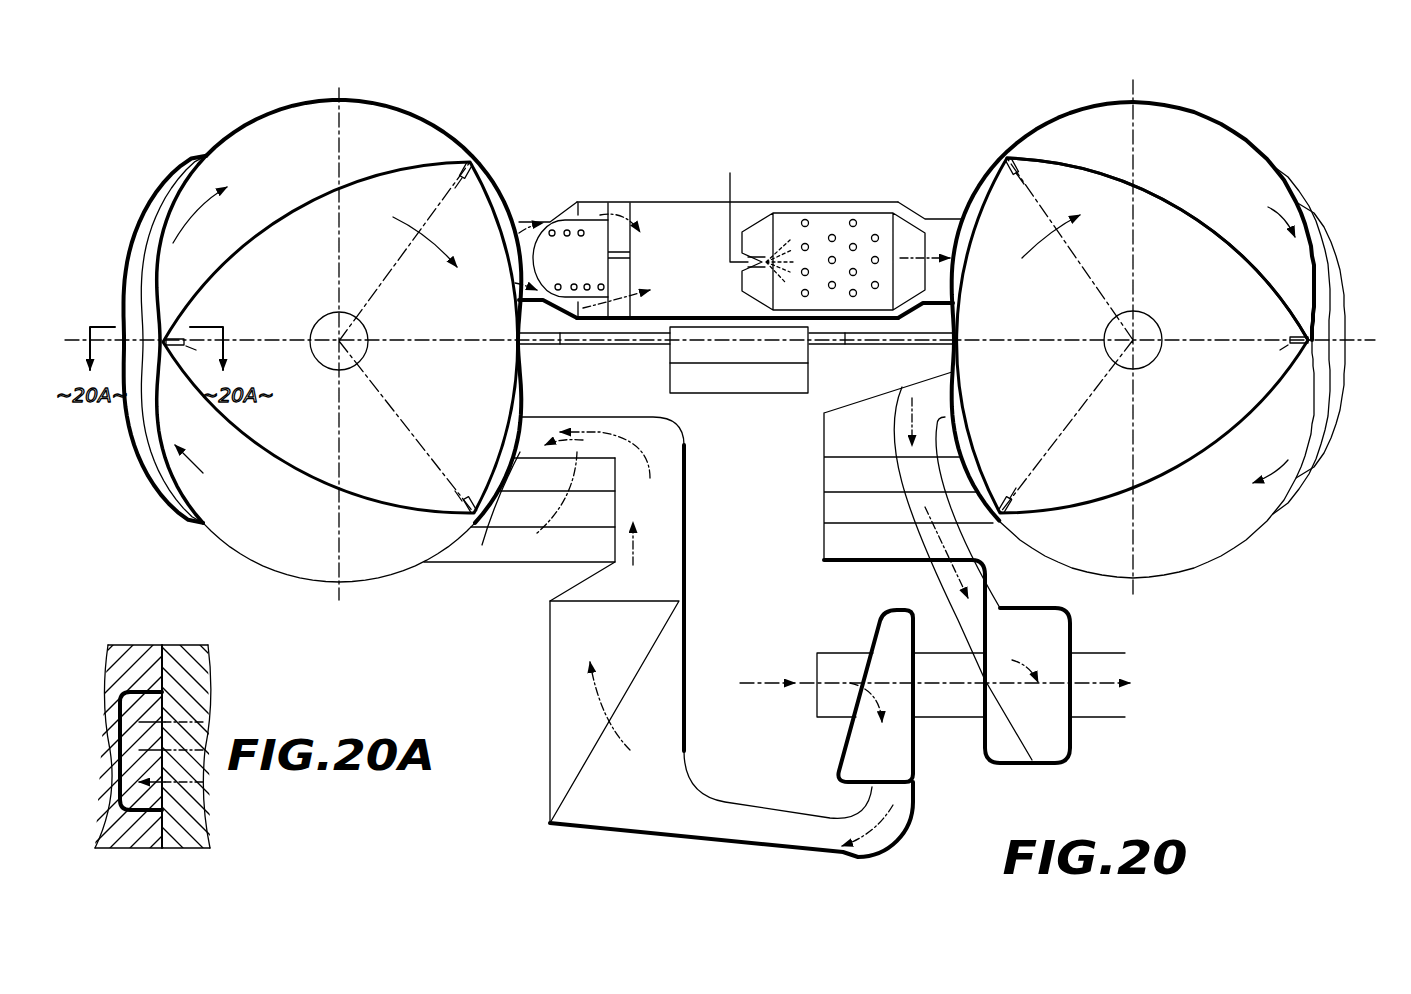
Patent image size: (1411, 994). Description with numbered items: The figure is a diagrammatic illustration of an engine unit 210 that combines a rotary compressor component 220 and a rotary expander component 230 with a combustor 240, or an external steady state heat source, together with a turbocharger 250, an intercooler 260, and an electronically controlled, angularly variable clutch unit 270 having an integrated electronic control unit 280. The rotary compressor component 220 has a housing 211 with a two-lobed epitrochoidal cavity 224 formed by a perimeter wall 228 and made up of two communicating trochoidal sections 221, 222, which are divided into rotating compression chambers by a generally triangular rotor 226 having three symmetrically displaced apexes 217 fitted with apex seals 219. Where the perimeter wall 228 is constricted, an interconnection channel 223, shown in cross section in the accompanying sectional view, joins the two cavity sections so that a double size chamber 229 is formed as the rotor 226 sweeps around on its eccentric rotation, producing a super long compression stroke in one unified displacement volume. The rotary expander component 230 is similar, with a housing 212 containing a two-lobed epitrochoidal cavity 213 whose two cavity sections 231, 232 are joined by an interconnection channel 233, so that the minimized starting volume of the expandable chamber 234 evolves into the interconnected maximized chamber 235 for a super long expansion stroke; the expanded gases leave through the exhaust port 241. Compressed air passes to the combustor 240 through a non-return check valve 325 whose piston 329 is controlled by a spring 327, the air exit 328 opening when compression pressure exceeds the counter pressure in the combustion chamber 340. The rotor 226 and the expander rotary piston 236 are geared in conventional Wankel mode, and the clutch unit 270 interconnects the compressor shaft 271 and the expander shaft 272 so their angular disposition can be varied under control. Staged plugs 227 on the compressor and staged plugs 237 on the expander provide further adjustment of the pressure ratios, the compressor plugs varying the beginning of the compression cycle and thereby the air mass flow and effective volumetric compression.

In FIG. 20, the engine unit 210 is at (453, 522).
In FIG. 20, the housing 211 is at (290, 577).
In FIG. 20, the housing 212 is at (1228, 552).
In FIG. 20, the two-lobed epitrochoidal cavity 213 is at (1168, 533).
In FIG. 20, the apexes 217 is at (473, 190).
In FIG. 20, the apex seals 219 is at (468, 172).
In FIG. 20, the rotary compressor component 220 is at (446, 126).
In FIG. 20, the trochoidal section 221 is at (317, 567).
In FIG. 20, the trochoidal section 222 is at (283, 135).
In FIG. 20, the interconnection channel 223 is at (138, 288).
In FIG. 20A, the interconnection channel 223 is at (137, 737).
In FIG. 20, the two-lobed epitrochoidal cavity 224 is at (513, 215).
In FIG. 20, the rotor 226 is at (420, 513).
In FIG. 20A, the rotor 226 is at (202, 850).
In FIG. 20, the staged plugs 227 is at (507, 543).
In FIG. 20, the perimeter wall 228 is at (247, 543).
In FIG. 20, the double size chamber 229 is at (217, 512).
In FIG. 20, the rotary expander component 230 is at (1085, 110).
In FIG. 20, the cavity section 231 is at (1200, 145).
In FIG. 20, the cavity section 232 is at (1168, 555).
In FIG. 20, the interconnection channel 233 is at (1338, 403).
In FIG. 20, the expandable chamber 234 is at (975, 198).
In FIG. 20, the interconnected maximized chamber 235 is at (1290, 278).
In FIG. 20, the rotary piston 236 is at (1168, 228).
In FIG. 20, the staged plugs 237 is at (856, 551).
In FIG. 20, the combustor 240 is at (858, 212).
In FIG. 20, the exhaust port 241 is at (940, 407).
In FIG. 20, the turbocharger 250 is at (1053, 753).
In FIG. 20, the intercooler 260 is at (558, 717).
In FIG. 20, the angularly variable clutch unit 270 is at (682, 352).
In FIG. 20, the compressor shaft 271 is at (562, 340).
In FIG. 20, the expander shaft 272 is at (843, 338).
In FIG. 20, the electronic control unit 280 is at (730, 383).
In FIG. 20, the non-return check valve 325 is at (596, 236).
In FIG. 20, the spring 327 is at (590, 283).
In FIG. 20, the air exit 328 is at (643, 228).
In FIG. 20, the piston 329 is at (540, 262).
In FIG. 20, the combustion chamber 340 is at (688, 306).